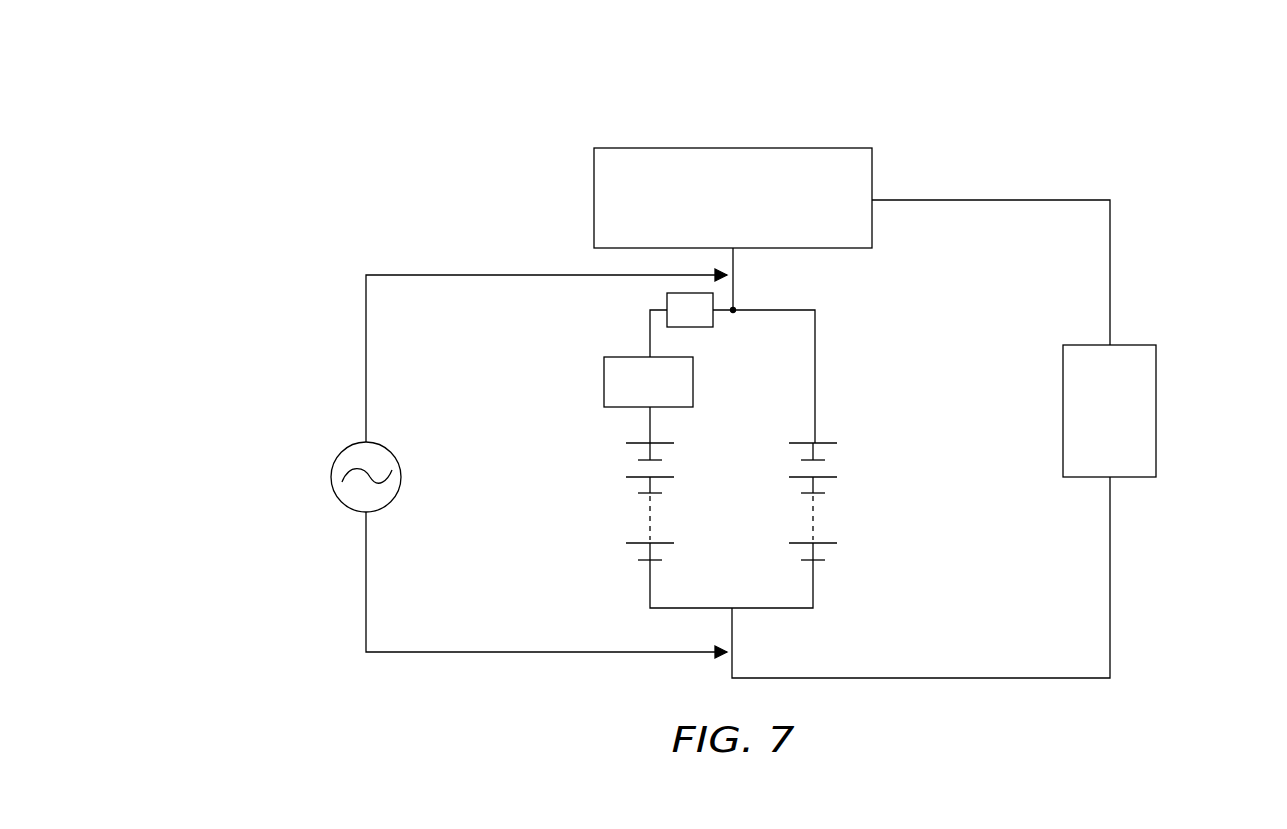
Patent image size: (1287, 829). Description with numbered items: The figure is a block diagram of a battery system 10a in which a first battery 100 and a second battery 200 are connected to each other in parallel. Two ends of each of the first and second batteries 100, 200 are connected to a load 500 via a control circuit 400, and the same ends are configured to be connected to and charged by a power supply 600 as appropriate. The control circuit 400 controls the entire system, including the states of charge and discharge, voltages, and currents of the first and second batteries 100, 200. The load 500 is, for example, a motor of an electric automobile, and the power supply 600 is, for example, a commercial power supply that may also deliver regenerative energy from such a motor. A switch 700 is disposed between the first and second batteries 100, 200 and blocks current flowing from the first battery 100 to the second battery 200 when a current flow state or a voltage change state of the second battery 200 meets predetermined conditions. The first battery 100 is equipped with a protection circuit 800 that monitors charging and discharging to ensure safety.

The battery system 10a is at (697, 88).
The control circuit 400 is at (840, 165).
The load 500 is at (1133, 368).
The power supply 600 is at (335, 462).
The switch 700 is at (690, 310).
The protection circuit 800 is at (613, 373).
The first battery 100 is at (607, 487).
The second battery 200 is at (855, 490).